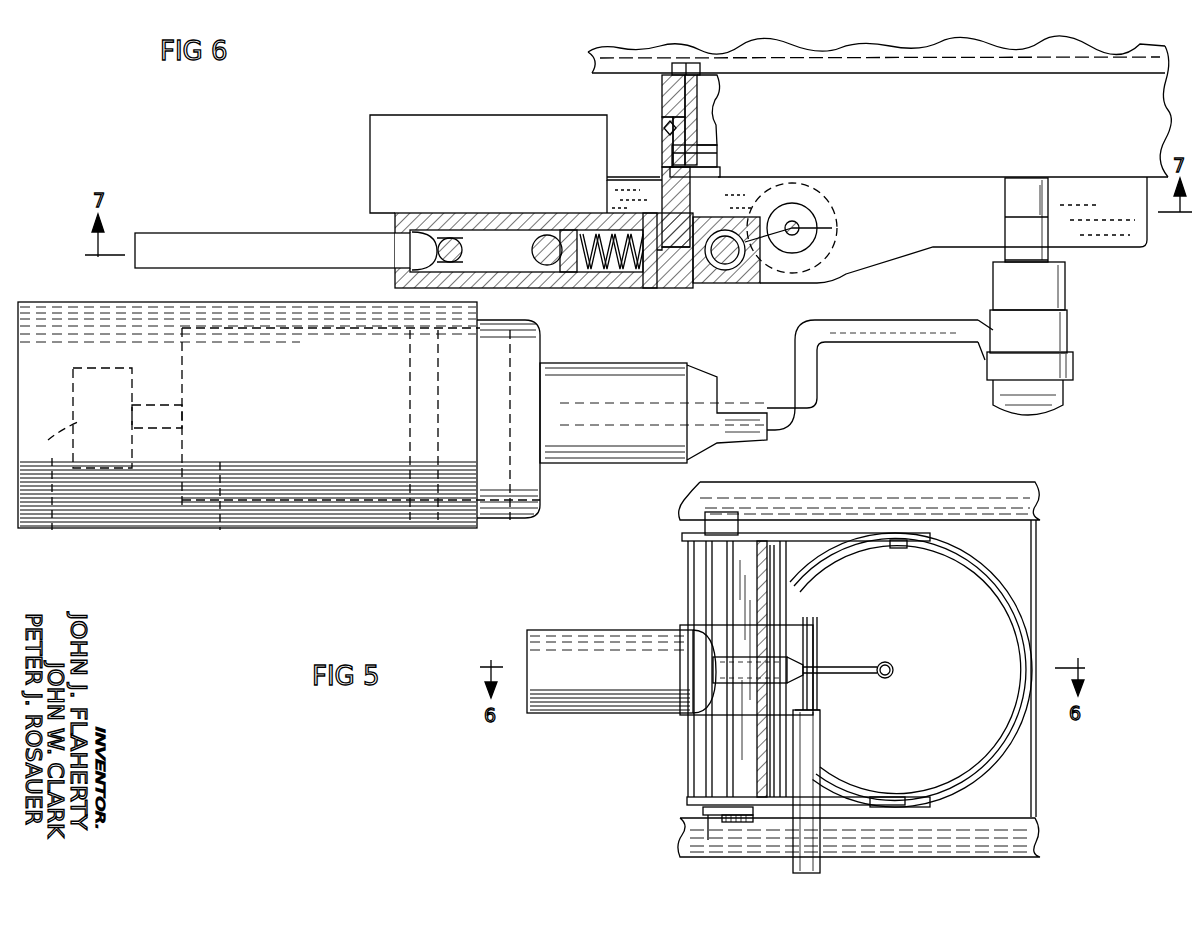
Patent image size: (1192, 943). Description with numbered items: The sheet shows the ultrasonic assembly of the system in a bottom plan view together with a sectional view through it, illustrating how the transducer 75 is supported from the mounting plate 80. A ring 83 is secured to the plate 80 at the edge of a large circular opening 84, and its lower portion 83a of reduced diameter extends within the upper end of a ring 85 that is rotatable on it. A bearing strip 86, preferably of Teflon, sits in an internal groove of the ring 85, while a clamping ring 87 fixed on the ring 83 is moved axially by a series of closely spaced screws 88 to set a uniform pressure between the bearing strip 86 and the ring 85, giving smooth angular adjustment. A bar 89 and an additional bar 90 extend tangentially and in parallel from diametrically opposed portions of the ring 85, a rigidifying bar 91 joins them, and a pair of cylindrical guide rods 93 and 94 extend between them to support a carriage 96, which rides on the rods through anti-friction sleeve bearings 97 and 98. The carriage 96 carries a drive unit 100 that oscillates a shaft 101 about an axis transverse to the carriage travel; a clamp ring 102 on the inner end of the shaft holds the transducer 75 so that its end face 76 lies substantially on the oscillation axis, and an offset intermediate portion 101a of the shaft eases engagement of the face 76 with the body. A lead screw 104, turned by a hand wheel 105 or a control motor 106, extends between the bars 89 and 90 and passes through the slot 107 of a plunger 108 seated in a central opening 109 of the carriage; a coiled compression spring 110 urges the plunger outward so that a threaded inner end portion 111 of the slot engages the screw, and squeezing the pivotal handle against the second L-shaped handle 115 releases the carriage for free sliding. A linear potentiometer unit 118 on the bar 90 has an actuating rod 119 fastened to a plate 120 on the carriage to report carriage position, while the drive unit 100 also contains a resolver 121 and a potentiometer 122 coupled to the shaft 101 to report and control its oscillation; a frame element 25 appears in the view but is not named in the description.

In FIG. 5, the frame plate 25 is at (1037, 507).
In FIG. 6, the transducer 75 is at (1056, 329).
In FIG. 5, the transducer 75 is at (894, 660).
In FIG. 6, the end face 76 is at (1042, 412).
In FIG. 5, the end face 76 is at (891, 677).
In FIG. 6, the mounting plate 80 is at (866, 106).
In FIG. 6, the ring 83 is at (668, 87).
In FIG. 6, the lower portion 83a is at (672, 107).
In FIG. 6, the circular opening 84 is at (698, 66).
In FIG. 6, the ring 85 is at (664, 152).
In FIG. 5, the ring 85 is at (990, 592).
In FIG. 6, the bearing strip 86 is at (701, 121).
In FIG. 6, the clamping ring 87 is at (671, 130).
In FIG. 6, the screws 88 is at (684, 68).
In FIG. 6, the bar 89 is at (1128, 233).
In FIG. 5, the bar 89 is at (682, 541).
In FIG. 5, the bar 90 is at (690, 798).
In FIG. 5, the rigidifying bar 91 is at (797, 583).
In FIG. 5, the guide rod 93 is at (688, 568).
In FIG. 5, the guide rod 94 is at (816, 564).
In FIG. 5, the carriage 96 is at (822, 721).
In FIG. 6, the sleeve bearing 97 is at (485, 216).
In FIG. 6, the sleeve bearing 98 is at (738, 268).
In FIG. 6, the drive unit 100 is at (336, 512).
In FIG. 5, the drive unit 100 is at (659, 697).
In FIG. 6, the shaft 101 is at (795, 424).
In FIG. 5, the shaft 101 is at (812, 662).
In FIG. 6, the intermediate portion 101a is at (893, 332).
In FIG. 5, the intermediate portion 101a is at (836, 664).
In FIG. 6, the clamp ring 102 is at (1070, 361).
In FIG. 6, the lead screw 104 is at (568, 288).
In FIG. 5, the lead screw 104 is at (727, 745).
In FIG. 5, the hand wheel 105 is at (707, 821).
In FIG. 5, the control motor 106 is at (708, 519).
In FIG. 6, the slot 107 is at (528, 266).
In FIG. 6, the plunger 108 is at (592, 268).
In FIG. 6, the central opening 109 is at (650, 270).
In FIG. 6, the coiled compression spring 110 is at (652, 282).
In FIG. 6, the threaded inner end portion 111 is at (547, 234).
In FIG. 6, the second L-shaped handle 115 is at (243, 236).
In FIG. 6, the linear potentiometer unit 118 is at (792, 214).
In FIG. 5, the linear potentiometer unit 118 is at (812, 752).
In FIG. 6, the actuating rod 119 is at (797, 224).
In FIG. 5, the actuating rod 119 is at (818, 690).
In FIG. 6, the plate 120 is at (501, 440).
In FIG. 5, the plate 120 is at (807, 616).
In FIG. 6, the resolver 121 is at (223, 511).
In FIG. 6, the potentiometer 122 is at (111, 464).